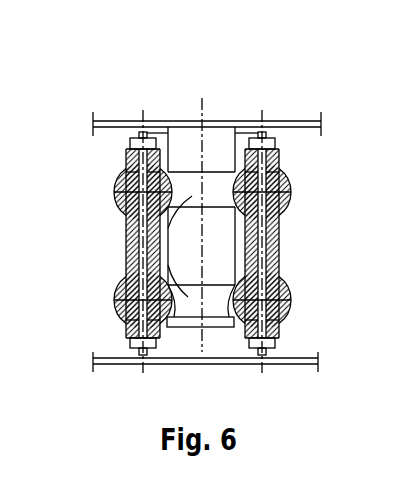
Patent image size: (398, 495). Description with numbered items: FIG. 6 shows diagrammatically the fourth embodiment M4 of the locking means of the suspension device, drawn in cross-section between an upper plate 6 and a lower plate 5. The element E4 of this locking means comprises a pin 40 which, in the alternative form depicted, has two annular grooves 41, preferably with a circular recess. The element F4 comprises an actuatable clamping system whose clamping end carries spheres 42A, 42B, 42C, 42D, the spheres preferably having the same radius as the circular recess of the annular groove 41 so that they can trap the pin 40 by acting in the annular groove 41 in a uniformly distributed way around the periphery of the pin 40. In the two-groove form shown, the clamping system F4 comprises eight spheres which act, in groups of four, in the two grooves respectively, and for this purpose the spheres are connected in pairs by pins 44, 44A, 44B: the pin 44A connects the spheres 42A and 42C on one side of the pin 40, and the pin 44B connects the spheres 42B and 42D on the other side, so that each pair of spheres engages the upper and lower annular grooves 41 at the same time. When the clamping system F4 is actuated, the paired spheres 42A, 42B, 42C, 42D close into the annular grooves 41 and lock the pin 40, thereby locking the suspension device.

The lower mounting plate 5 is at (298, 367).
The upper mounting plate 6 is at (300, 122).
The pin 40 is at (182, 137).
The annular groove 41 is at (146, 240).
The sphere 42A is at (114, 192).
The sphere 42B is at (291, 190).
The sphere 42C is at (118, 301).
The sphere 42D is at (291, 300).
The pin 44 is at (397, 352).
The pin 44A is at (162, 252).
The pin 44B is at (263, 243).
The fourth embodiment of the locking means M4 is at (203, 52).
The element comprising a pin E4 is at (219, 104).
The clamping system F4 is at (104, 160).